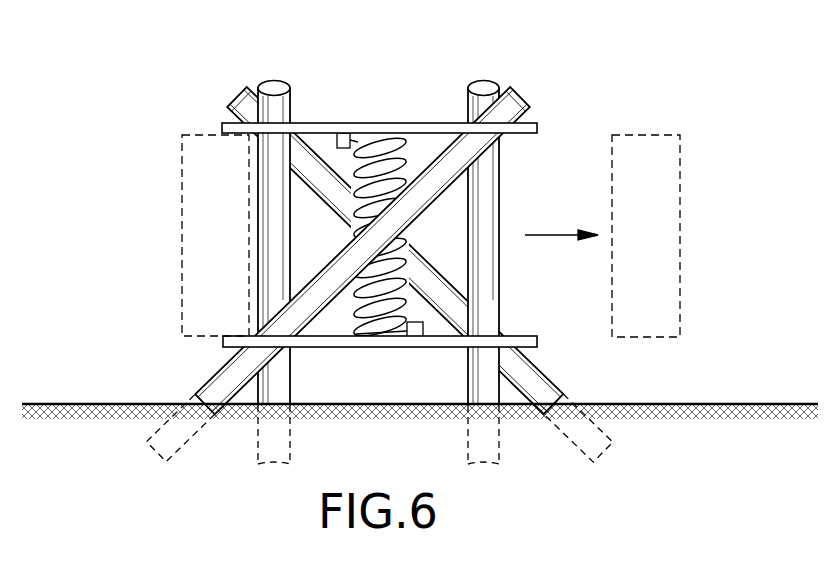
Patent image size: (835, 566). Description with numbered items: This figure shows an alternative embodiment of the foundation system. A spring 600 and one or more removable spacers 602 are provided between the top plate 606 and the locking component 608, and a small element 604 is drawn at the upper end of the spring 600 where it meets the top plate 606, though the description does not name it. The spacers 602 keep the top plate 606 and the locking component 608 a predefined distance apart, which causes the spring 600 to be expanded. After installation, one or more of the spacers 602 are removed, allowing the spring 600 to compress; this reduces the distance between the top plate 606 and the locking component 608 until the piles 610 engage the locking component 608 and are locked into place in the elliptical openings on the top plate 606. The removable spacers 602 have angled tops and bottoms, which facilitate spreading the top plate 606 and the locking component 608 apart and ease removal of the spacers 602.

The spring 600 is at (403, 176).
The removable spacers 602 is at (182, 243).
The spring mounting bracket 604 is at (344, 134).
The top plate 606 is at (538, 128).
The locking component 608 is at (538, 342).
The piles 610 is at (236, 96).